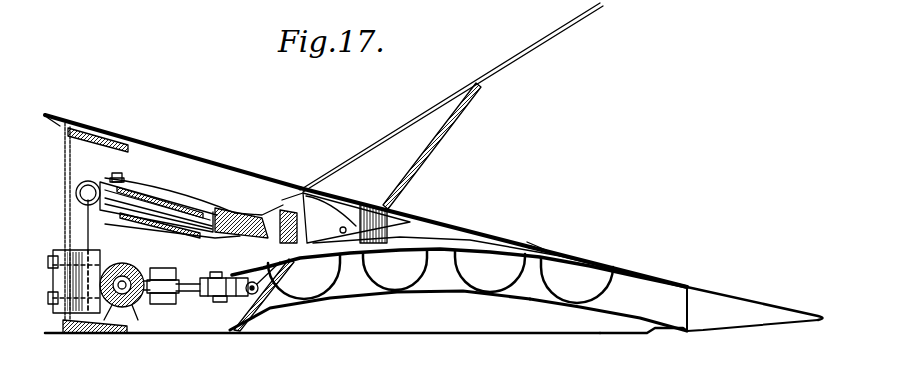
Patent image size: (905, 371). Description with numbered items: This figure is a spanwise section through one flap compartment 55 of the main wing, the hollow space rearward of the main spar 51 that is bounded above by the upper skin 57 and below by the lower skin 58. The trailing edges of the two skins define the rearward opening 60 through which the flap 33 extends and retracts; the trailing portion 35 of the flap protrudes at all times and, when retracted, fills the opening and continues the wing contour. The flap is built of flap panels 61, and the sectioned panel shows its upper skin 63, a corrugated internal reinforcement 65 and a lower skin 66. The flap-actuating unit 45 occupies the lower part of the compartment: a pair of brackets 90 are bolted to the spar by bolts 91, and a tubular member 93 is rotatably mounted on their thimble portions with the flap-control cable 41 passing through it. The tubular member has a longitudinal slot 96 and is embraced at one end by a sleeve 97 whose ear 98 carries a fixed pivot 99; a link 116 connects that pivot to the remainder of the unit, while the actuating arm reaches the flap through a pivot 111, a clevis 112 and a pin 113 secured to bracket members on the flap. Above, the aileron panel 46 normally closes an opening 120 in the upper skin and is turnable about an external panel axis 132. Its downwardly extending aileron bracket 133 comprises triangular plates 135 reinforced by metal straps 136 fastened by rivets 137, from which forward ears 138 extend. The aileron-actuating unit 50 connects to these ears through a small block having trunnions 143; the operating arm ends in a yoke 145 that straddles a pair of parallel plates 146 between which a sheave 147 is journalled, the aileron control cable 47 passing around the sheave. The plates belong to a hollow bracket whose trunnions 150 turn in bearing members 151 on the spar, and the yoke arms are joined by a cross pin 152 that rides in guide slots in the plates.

The flap 33 is at (706, 335).
The trailing portion of the flap 35 is at (737, 297).
The cable 41 is at (77, 333).
The flap-actuating unit 45 is at (152, 311).
The aileron panel 46 is at (560, 32).
The control cable 47 is at (86, 181).
The aileron-actuating unit 50 is at (200, 170).
The main spar 51 is at (62, 137).
The flap compartment 55 is at (489, 313).
The upper skin 57 is at (153, 143).
The lower skin 58 is at (308, 335).
The opening 60 is at (645, 335).
The flap panel 61 is at (586, 309).
The upper skin of flap panel 63 is at (657, 280).
The corrugated internal reinforcement 65 is at (553, 273).
The lower skin of flap panel 66 is at (614, 314).
The bracket 90 is at (80, 255).
The bolt 91 is at (75, 307).
The tubular member 93 is at (113, 265).
The longitudinal slot 96 is at (145, 305).
The sleeve 97 is at (120, 307).
The ear 98 is at (176, 285).
The pivot 99 is at (158, 268).
The pivot 111 is at (222, 302).
The clevis 112 is at (253, 310).
The pin 113 is at (268, 280).
The link 116 is at (175, 280).
The opening 120 is at (527, 242).
The external panel axis 132 is at (310, 172).
The aileron bracket 133 is at (403, 255).
The triangular plate 135 is at (397, 227).
The metal strap 136 is at (494, 243).
The rivet 137 is at (300, 188).
The ear 138 is at (283, 212).
The trunnion 143 is at (304, 276).
The yoke 145 is at (167, 187).
The parallel plate 146 is at (172, 233).
The sheave 147 is at (226, 208).
The trunnion 150 is at (90, 183).
The bearing member 151 is at (77, 218).
The cross pin 152 is at (123, 173).